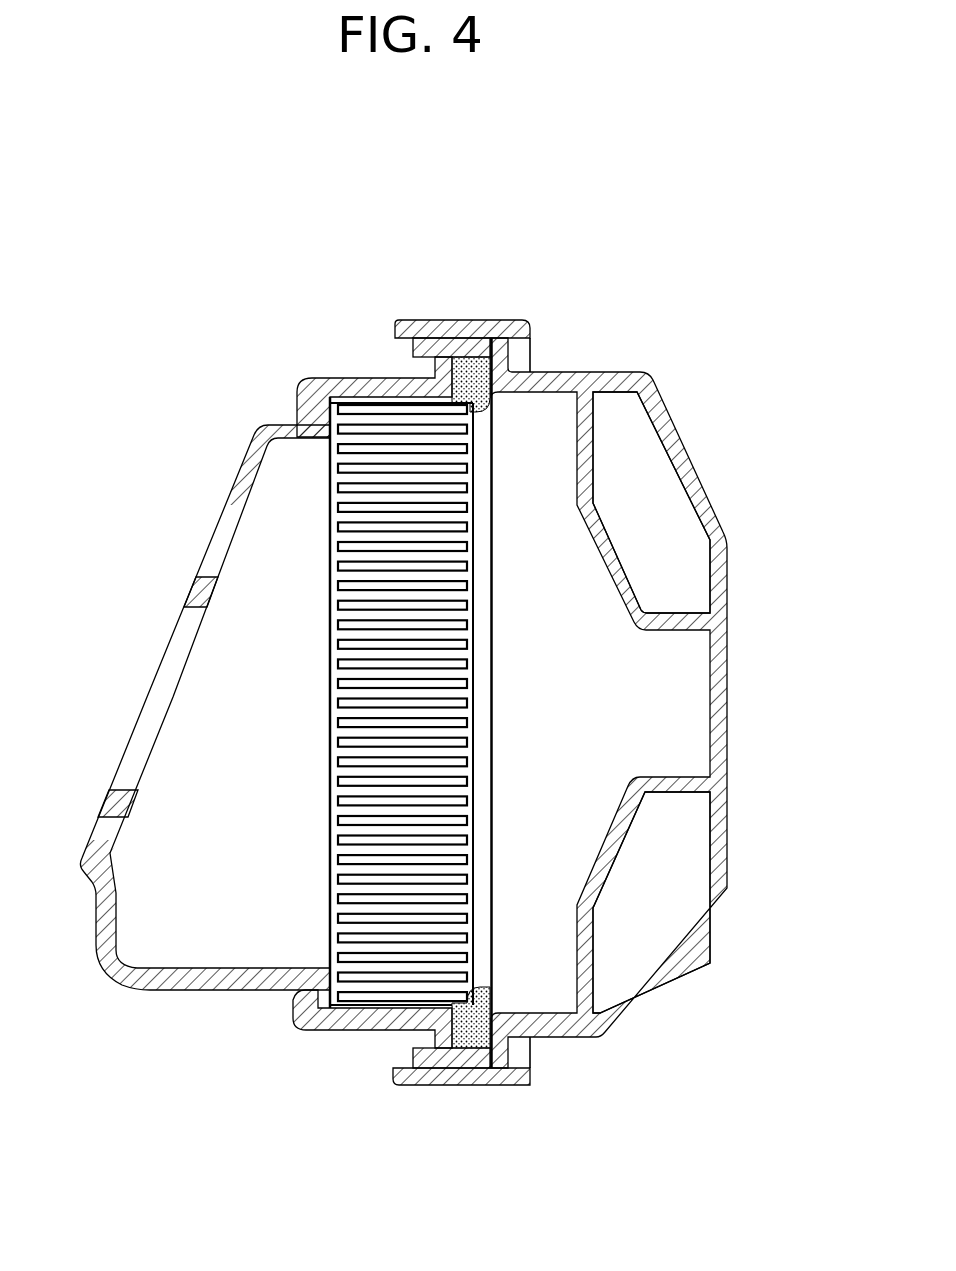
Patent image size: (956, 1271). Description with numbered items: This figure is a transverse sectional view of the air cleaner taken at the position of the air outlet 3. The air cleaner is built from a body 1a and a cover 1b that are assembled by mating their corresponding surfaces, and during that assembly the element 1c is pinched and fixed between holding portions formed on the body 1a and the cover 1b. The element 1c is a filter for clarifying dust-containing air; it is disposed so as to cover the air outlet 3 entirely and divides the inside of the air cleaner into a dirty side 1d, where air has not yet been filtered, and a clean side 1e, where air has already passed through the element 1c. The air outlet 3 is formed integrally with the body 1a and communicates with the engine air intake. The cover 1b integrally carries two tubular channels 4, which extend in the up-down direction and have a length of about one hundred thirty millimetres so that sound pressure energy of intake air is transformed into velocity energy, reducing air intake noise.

The body 1a is at (300, 378).
The cover 1b is at (455, 320).
The element 1c is at (413, 552).
The dirty side 1d is at (667, 707).
The clean side 1e is at (263, 593).
The air outlet 3 is at (160, 658).
The tubular channels 4 is at (655, 512).